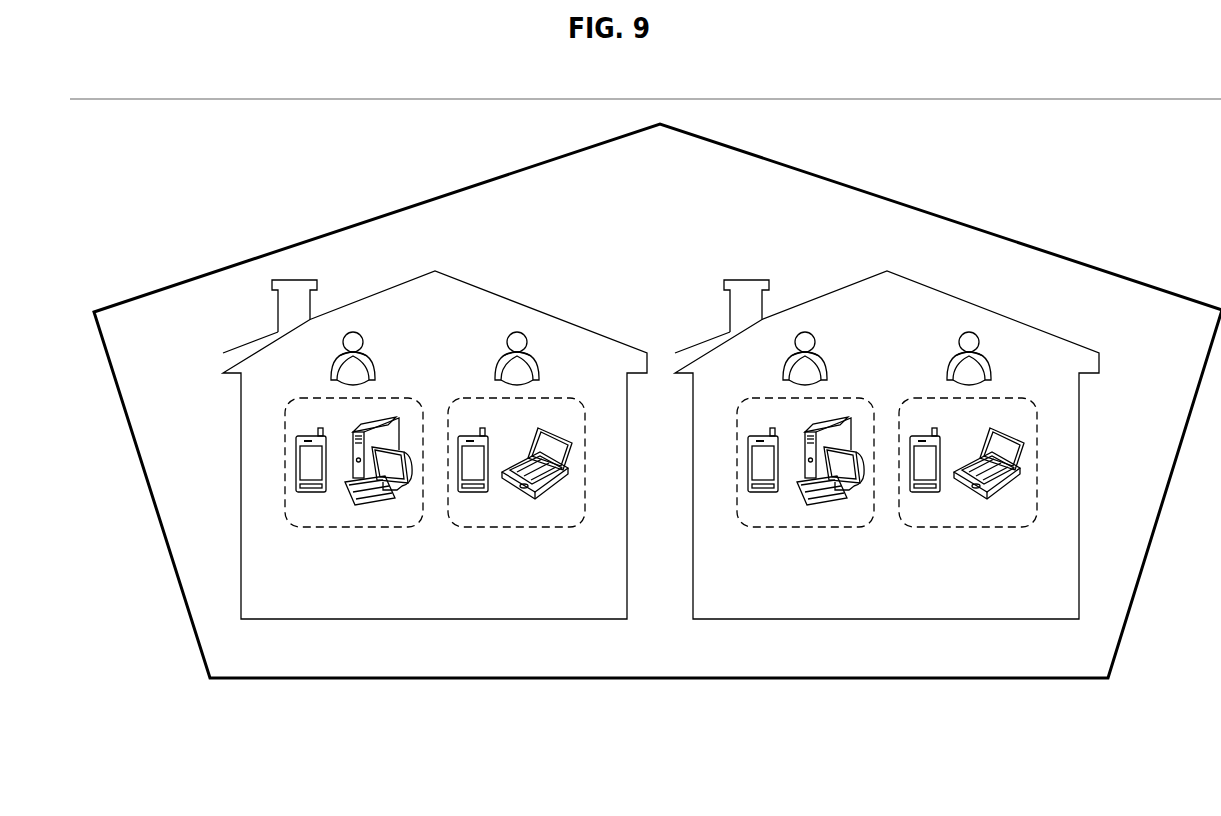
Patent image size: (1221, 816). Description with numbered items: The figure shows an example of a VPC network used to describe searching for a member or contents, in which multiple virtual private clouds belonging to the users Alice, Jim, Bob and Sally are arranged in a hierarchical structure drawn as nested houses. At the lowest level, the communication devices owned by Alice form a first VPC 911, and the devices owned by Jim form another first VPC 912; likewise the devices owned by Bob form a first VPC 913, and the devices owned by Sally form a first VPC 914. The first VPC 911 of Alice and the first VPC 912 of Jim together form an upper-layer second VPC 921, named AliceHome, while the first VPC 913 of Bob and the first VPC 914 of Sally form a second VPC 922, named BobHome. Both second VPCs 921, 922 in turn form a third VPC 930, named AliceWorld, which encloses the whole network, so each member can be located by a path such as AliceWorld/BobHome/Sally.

The first VPC, VPC-1 of Alice 911 is at (400, 398).
The first VPC, VPC-1 of Jim 912 is at (547, 398).
The first VPC, VPC-1 of Bob 913 is at (852, 398).
The first VPC, VPC-1 of Sally 914 is at (999, 398).
The second VPC, VPC-2 (AliceHome) 921 is at (472, 284).
The second VPC, VPC-2 (BobHome) 922 is at (924, 284).
The third VPC, VPC-3 (AliceWorld) 930 is at (808, 170).